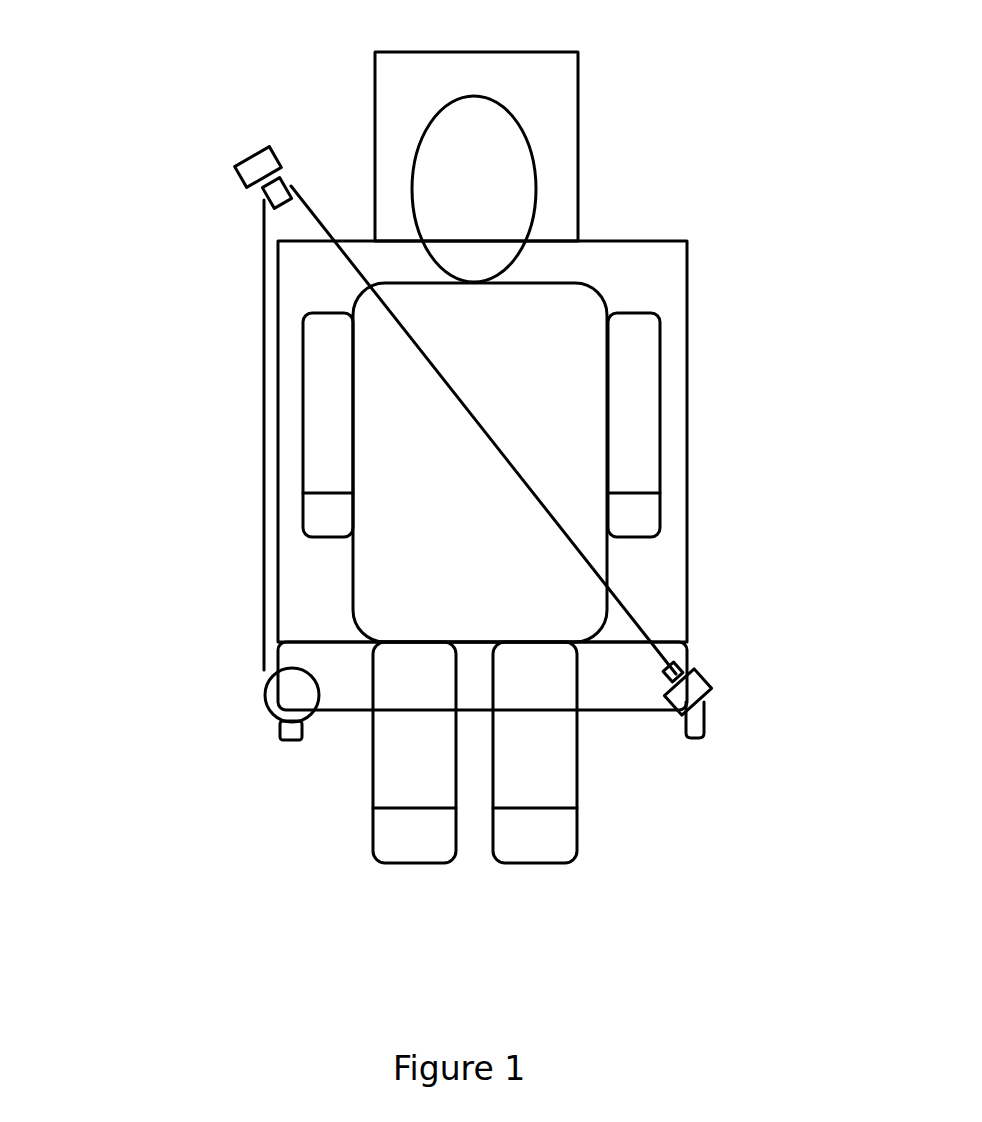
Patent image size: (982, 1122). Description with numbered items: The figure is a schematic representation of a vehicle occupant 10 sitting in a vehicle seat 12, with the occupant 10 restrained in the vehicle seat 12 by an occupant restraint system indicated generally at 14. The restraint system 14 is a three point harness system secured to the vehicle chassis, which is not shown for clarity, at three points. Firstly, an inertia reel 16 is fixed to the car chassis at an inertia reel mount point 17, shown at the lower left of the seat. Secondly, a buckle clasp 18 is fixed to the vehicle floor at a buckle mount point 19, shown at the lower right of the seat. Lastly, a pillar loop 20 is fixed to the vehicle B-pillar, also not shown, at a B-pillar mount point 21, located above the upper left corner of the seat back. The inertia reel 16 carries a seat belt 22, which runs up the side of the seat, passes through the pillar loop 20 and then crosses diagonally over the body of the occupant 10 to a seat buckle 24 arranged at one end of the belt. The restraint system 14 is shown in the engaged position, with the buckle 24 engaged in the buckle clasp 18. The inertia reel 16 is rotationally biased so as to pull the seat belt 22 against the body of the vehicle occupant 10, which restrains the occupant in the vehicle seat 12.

The vehicle occupant 10 is at (552, 367).
The vehicle seat 12 is at (670, 142).
The occupant restraint system 14 is at (222, 290).
The inertia reel 16 is at (290, 697).
The inertia reel mount point 17 is at (297, 727).
The buckle clasp 18 is at (702, 685).
The buckle mount point 19 is at (705, 730).
The pillar loop 20 is at (278, 177).
The B-pillar mount point 21 is at (247, 167).
The seat belt 22 is at (263, 495).
The seat buckle 24 is at (687, 663).